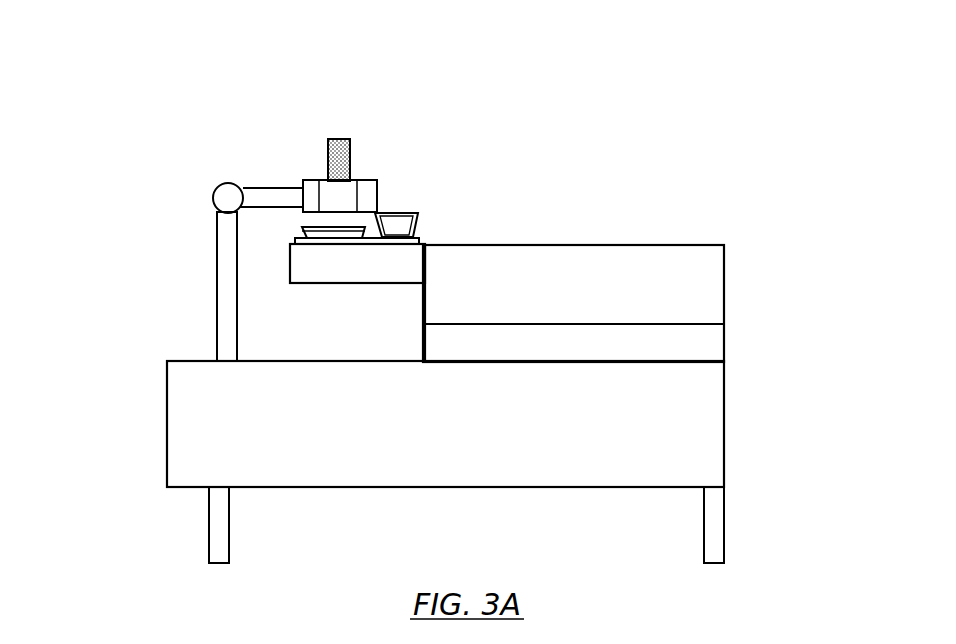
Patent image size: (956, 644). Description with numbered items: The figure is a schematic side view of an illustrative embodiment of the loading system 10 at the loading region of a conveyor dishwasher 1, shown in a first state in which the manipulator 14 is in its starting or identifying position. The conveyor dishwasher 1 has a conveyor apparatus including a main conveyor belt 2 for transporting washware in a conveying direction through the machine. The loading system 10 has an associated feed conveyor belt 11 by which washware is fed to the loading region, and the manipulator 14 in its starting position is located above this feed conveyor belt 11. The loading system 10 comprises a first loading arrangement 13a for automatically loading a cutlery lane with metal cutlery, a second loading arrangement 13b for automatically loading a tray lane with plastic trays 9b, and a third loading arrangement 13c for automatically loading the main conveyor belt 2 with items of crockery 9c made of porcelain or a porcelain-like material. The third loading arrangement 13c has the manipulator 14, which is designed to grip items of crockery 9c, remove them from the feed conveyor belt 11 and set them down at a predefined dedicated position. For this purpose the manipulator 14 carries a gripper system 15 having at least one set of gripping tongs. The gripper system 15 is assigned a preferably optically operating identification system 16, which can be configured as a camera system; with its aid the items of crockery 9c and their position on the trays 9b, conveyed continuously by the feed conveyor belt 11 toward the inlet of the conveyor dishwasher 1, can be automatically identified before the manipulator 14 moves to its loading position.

The conveyor dishwasher 1 is at (640, 432).
The main conveyor belt 2 is at (265, 361).
The loading system 10 is at (86, 203).
The feed conveyor belt 11 is at (290, 253).
The first loading arrangement 13a is at (462, 222).
The second loading arrangement 13b is at (596, 222).
The third loading arrangement 13c is at (200, 67).
The manipulator 14 is at (253, 193).
The gripper system 15 is at (315, 188).
The identification system 16 is at (343, 173).
The washware of the second washware group 9b is at (415, 238).
The washware of the third washware group 9c is at (312, 225).